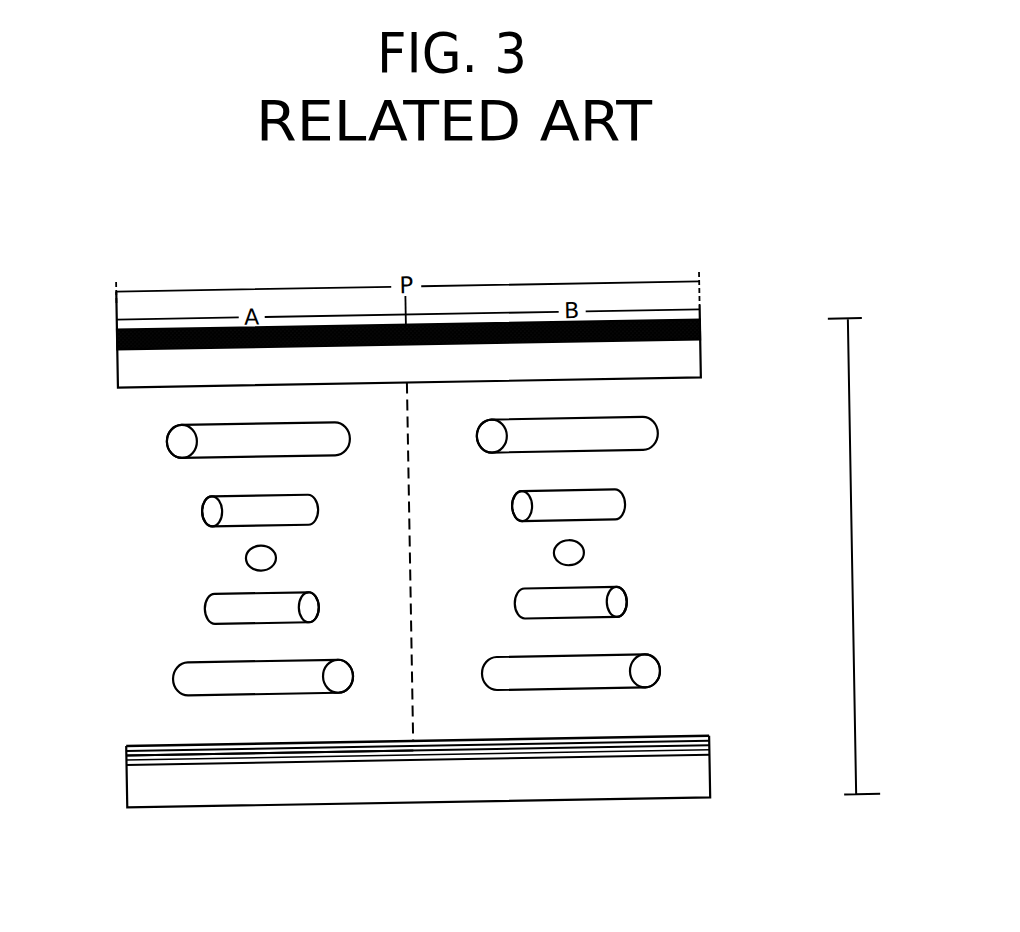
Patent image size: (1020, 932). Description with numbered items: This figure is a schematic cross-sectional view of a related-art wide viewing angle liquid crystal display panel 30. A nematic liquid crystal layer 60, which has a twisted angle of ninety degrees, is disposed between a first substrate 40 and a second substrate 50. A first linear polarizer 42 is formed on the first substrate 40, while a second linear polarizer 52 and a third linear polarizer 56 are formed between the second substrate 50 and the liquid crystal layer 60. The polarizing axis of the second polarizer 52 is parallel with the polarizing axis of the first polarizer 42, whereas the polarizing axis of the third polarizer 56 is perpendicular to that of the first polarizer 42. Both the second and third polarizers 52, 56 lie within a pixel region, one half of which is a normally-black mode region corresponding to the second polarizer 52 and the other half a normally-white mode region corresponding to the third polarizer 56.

The liquid crystal display panel 30 is at (854, 556).
The first substrate 40 is at (704, 360).
The first linear polarizer 42 is at (704, 326).
The second substrate 50 is at (704, 786).
The second linear polarizer 52 is at (123, 742).
The third linear polarizer 56 is at (706, 742).
The nematic liquid crystal layer 60 is at (669, 438).